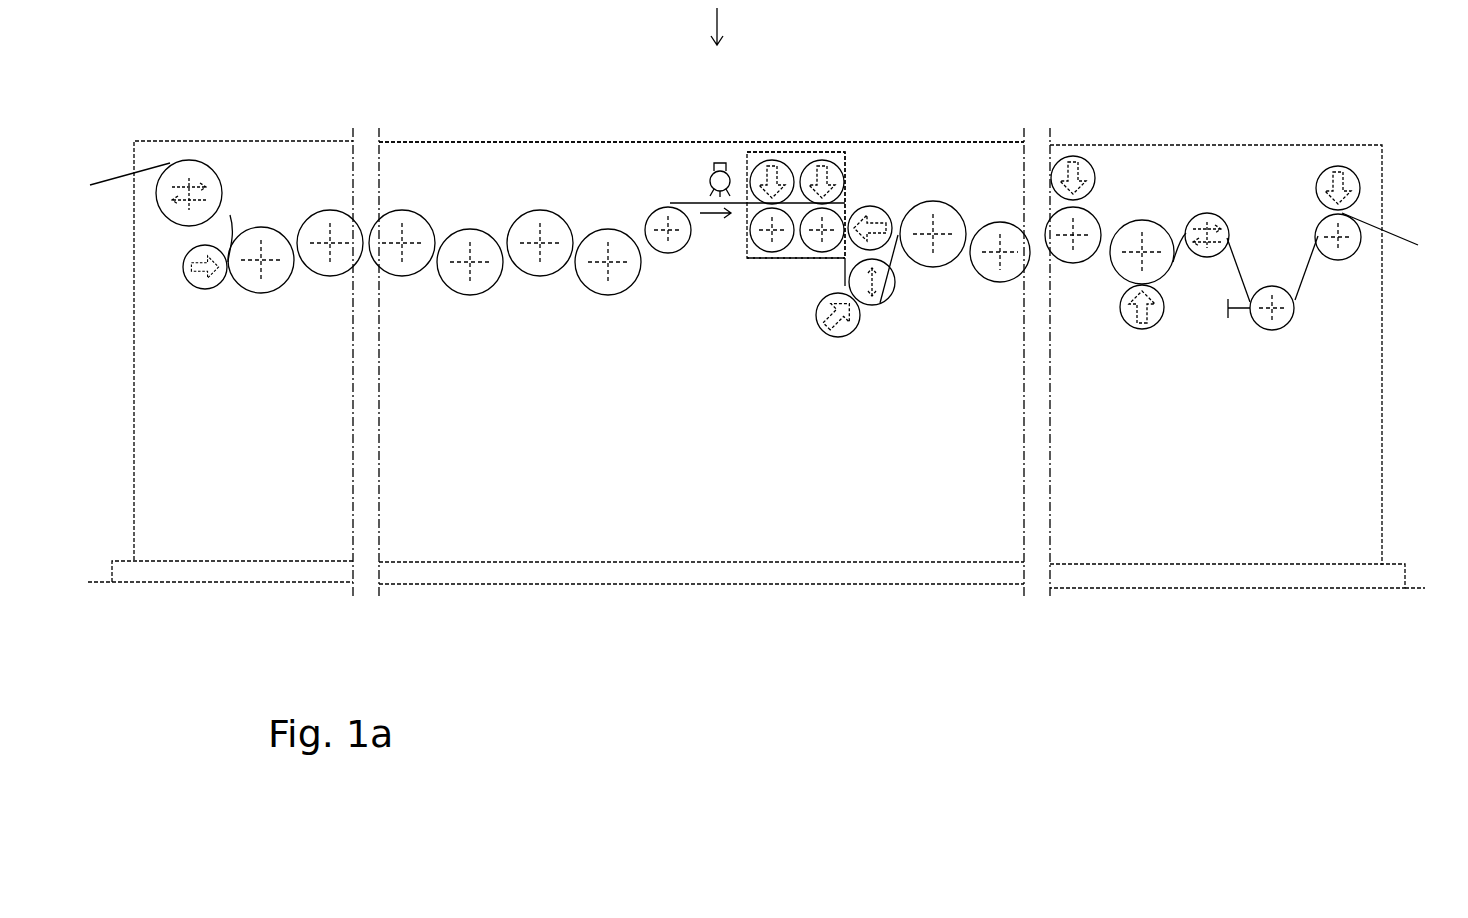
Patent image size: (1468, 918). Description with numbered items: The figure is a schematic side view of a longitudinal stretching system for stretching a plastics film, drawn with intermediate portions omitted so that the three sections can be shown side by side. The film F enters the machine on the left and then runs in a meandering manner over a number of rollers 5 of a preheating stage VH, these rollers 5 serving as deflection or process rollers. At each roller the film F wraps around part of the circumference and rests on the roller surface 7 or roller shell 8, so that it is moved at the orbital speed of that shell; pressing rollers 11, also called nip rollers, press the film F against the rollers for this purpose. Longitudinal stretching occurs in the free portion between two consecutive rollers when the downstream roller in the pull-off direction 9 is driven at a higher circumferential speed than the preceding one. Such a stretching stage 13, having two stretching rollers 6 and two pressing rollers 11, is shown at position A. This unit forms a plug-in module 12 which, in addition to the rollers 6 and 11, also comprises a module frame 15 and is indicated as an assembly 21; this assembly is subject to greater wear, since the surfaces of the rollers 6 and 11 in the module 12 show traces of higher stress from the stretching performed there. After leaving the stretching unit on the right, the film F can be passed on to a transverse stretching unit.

The rollers 5 is at (407, 263).
The stretching rollers 6 is at (814, 240).
The roller surface 7 is at (318, 278).
The roller shell 8 is at (612, 118).
The pull-off direction 9 is at (712, 218).
The pressing rollers 11 is at (817, 175).
The plug-in module 12 is at (863, 177).
The stretching stage 13 is at (915, 187).
The module frame 15 is at (834, 146).
The assembly 21 is at (765, 152).
The position A is at (744, 262).
The film F is at (152, 167).
The preheating stage VH is at (519, 160).